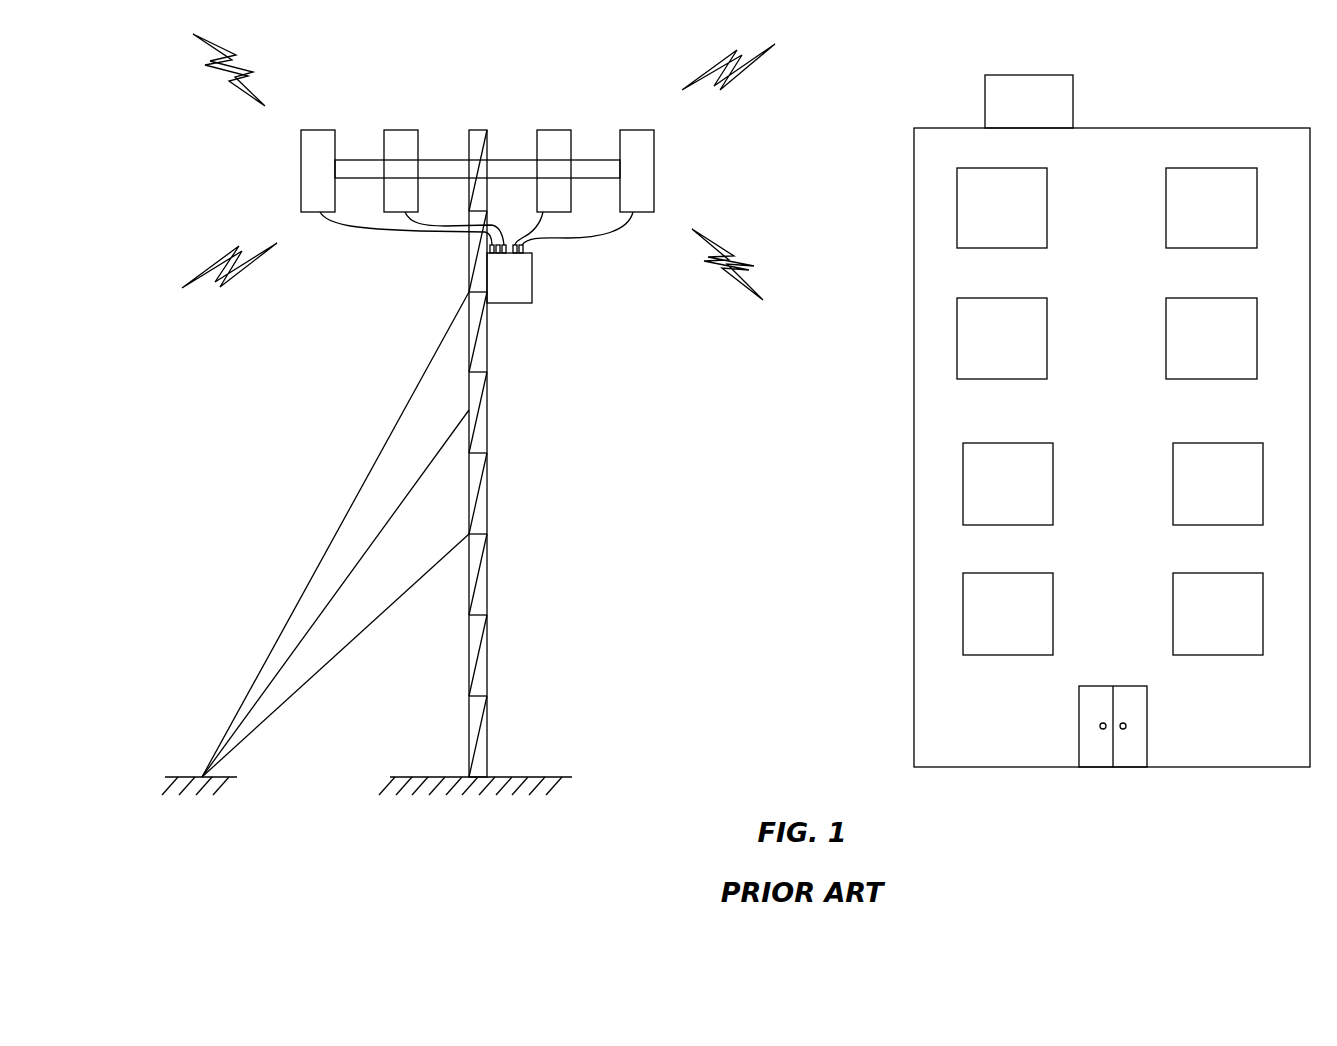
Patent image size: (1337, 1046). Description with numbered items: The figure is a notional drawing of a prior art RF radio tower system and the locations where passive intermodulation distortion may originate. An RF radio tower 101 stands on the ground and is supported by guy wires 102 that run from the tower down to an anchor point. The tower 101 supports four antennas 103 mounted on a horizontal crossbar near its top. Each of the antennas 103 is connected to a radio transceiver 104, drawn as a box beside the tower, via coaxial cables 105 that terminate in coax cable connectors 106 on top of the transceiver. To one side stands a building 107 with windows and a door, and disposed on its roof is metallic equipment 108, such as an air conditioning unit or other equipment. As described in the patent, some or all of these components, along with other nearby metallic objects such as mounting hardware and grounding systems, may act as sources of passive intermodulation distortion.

The RF radio tower 101 is at (477, 453).
The guy wires 102 is at (334, 547).
The antennas 103 is at (477, 159).
The radio transceiver 104 is at (509, 294).
The coaxial cables 105 is at (428, 226).
The coax cable connectors 106 is at (545, 248).
The building 107 is at (1093, 447).
The metallic equipment 108 is at (1029, 89).